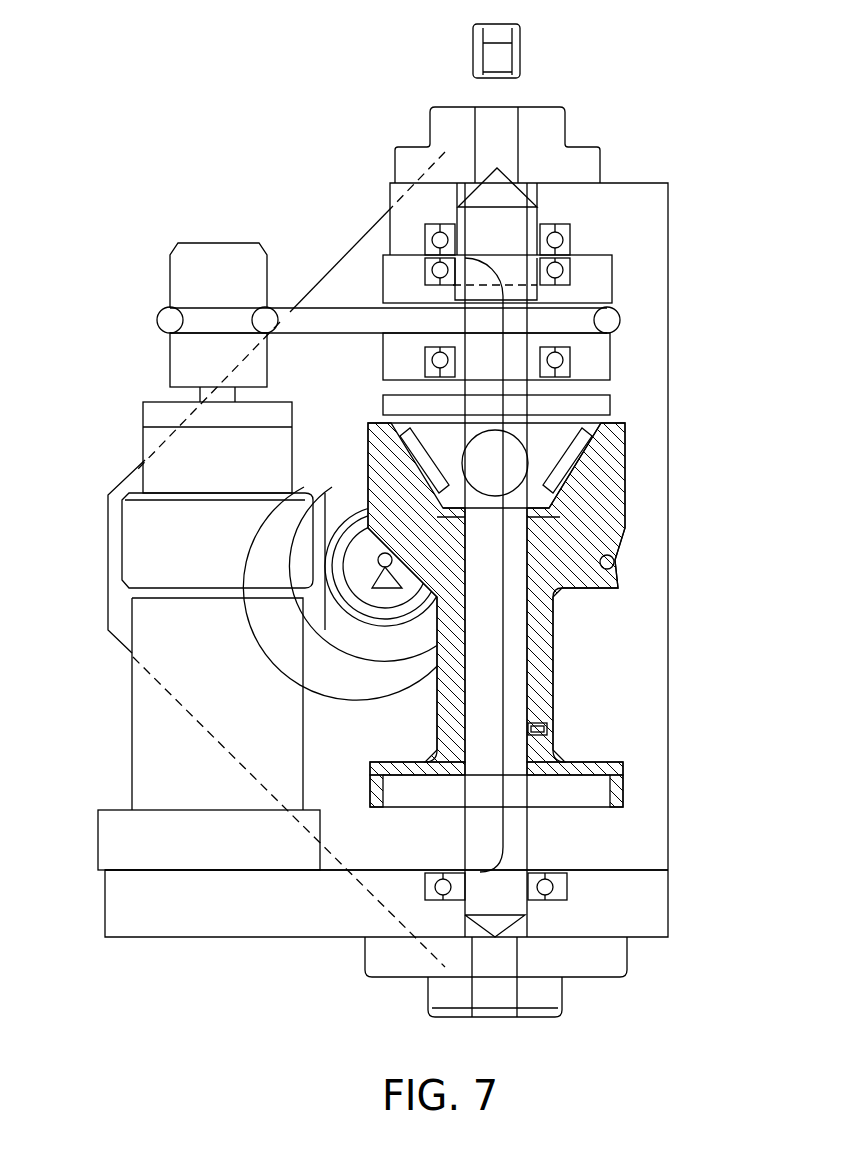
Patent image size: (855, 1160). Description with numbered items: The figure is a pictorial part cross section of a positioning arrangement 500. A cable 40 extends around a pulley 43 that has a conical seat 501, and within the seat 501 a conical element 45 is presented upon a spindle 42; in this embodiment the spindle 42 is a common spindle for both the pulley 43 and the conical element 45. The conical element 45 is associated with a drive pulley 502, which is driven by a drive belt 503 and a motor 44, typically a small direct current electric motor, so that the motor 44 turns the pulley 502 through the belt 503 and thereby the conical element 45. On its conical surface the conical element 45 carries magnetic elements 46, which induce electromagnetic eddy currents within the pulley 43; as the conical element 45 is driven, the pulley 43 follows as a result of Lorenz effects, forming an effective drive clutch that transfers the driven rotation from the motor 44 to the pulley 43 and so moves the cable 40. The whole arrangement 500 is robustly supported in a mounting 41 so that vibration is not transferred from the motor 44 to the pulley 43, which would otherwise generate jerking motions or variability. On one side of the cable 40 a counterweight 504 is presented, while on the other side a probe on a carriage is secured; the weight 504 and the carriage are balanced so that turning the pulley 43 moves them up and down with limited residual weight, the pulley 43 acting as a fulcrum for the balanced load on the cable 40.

The positioning arrangement 500 is at (319, 150).
The drive belt 503 is at (325, 318).
The drive pulley 502 is at (595, 277).
The magnetic elements 46 is at (555, 437).
The conical element 45 is at (513, 450).
The pulley 43 is at (612, 475).
The conical seat 501 is at (600, 495).
The cable 40 is at (613, 562).
The mounting 41 is at (655, 908).
The spindle 42 is at (525, 915).
The motor 44 is at (143, 440).
The counterweight 504 is at (363, 637).